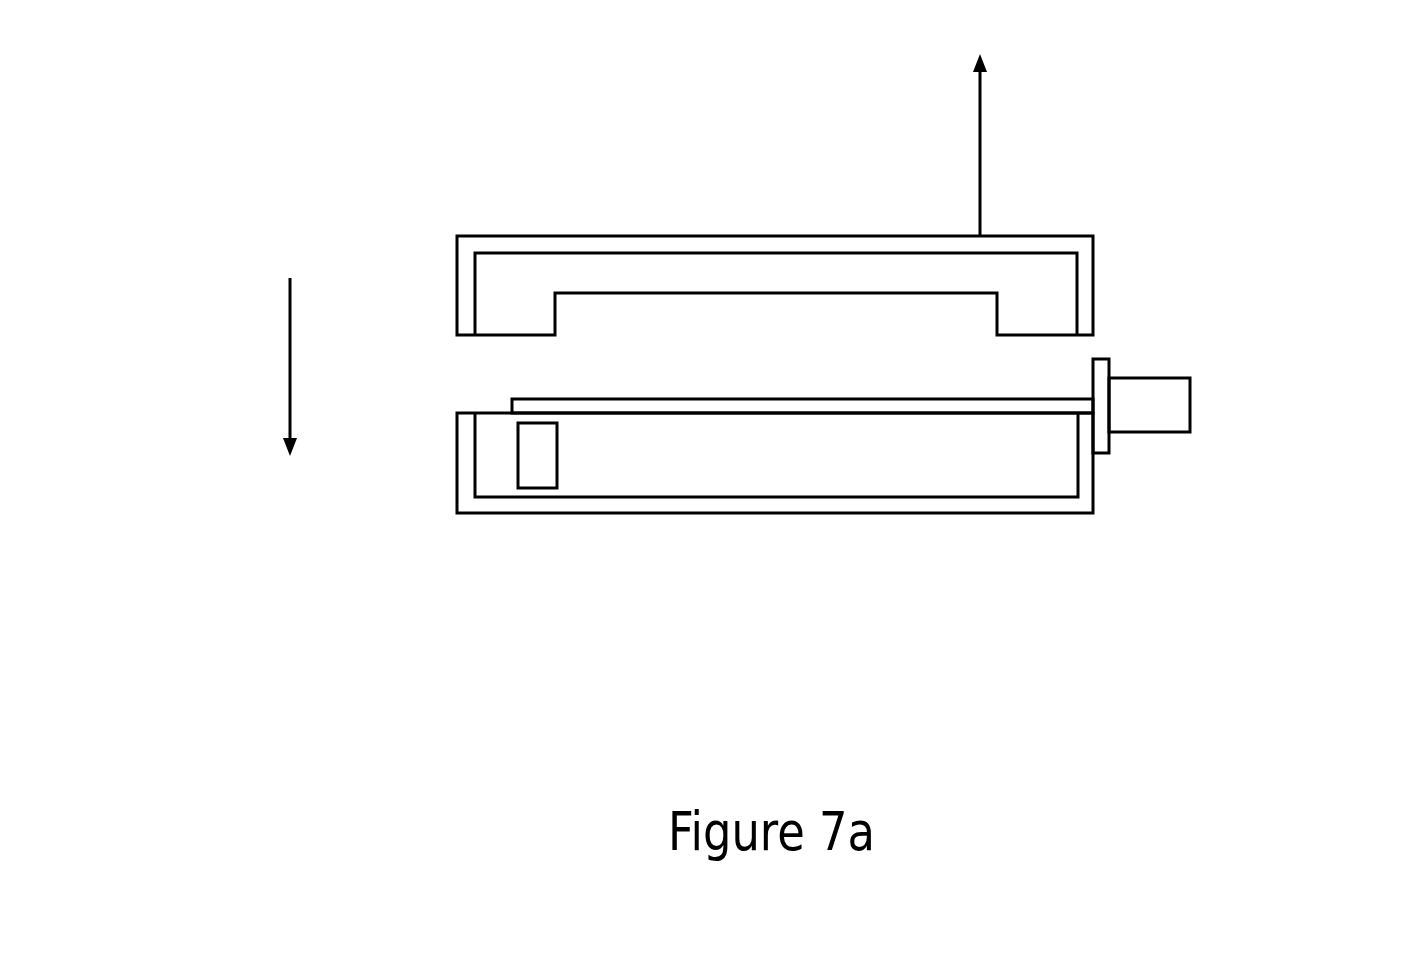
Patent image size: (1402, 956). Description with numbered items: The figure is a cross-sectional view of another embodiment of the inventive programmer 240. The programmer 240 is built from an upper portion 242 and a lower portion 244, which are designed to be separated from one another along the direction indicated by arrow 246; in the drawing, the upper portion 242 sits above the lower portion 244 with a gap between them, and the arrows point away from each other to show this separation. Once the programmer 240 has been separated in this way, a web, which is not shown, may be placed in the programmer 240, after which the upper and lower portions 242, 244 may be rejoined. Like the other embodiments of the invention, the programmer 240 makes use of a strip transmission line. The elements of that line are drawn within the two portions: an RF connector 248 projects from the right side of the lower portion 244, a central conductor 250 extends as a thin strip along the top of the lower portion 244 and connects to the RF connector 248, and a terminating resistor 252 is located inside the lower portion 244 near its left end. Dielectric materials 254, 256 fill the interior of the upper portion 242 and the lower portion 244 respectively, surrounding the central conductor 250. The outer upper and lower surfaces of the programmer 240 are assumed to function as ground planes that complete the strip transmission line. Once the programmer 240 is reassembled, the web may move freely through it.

The programmer 240 is at (434, 205).
The upper portion 242 is at (791, 222).
The lower portion 244 is at (792, 530).
The arrow 246 is at (290, 337).
The RF connector 248 is at (1162, 412).
The central conductor 250 is at (747, 402).
The terminating resistor 252 is at (547, 460).
The dielectric material 254 is at (650, 272).
The dielectric material 256 is at (990, 460).